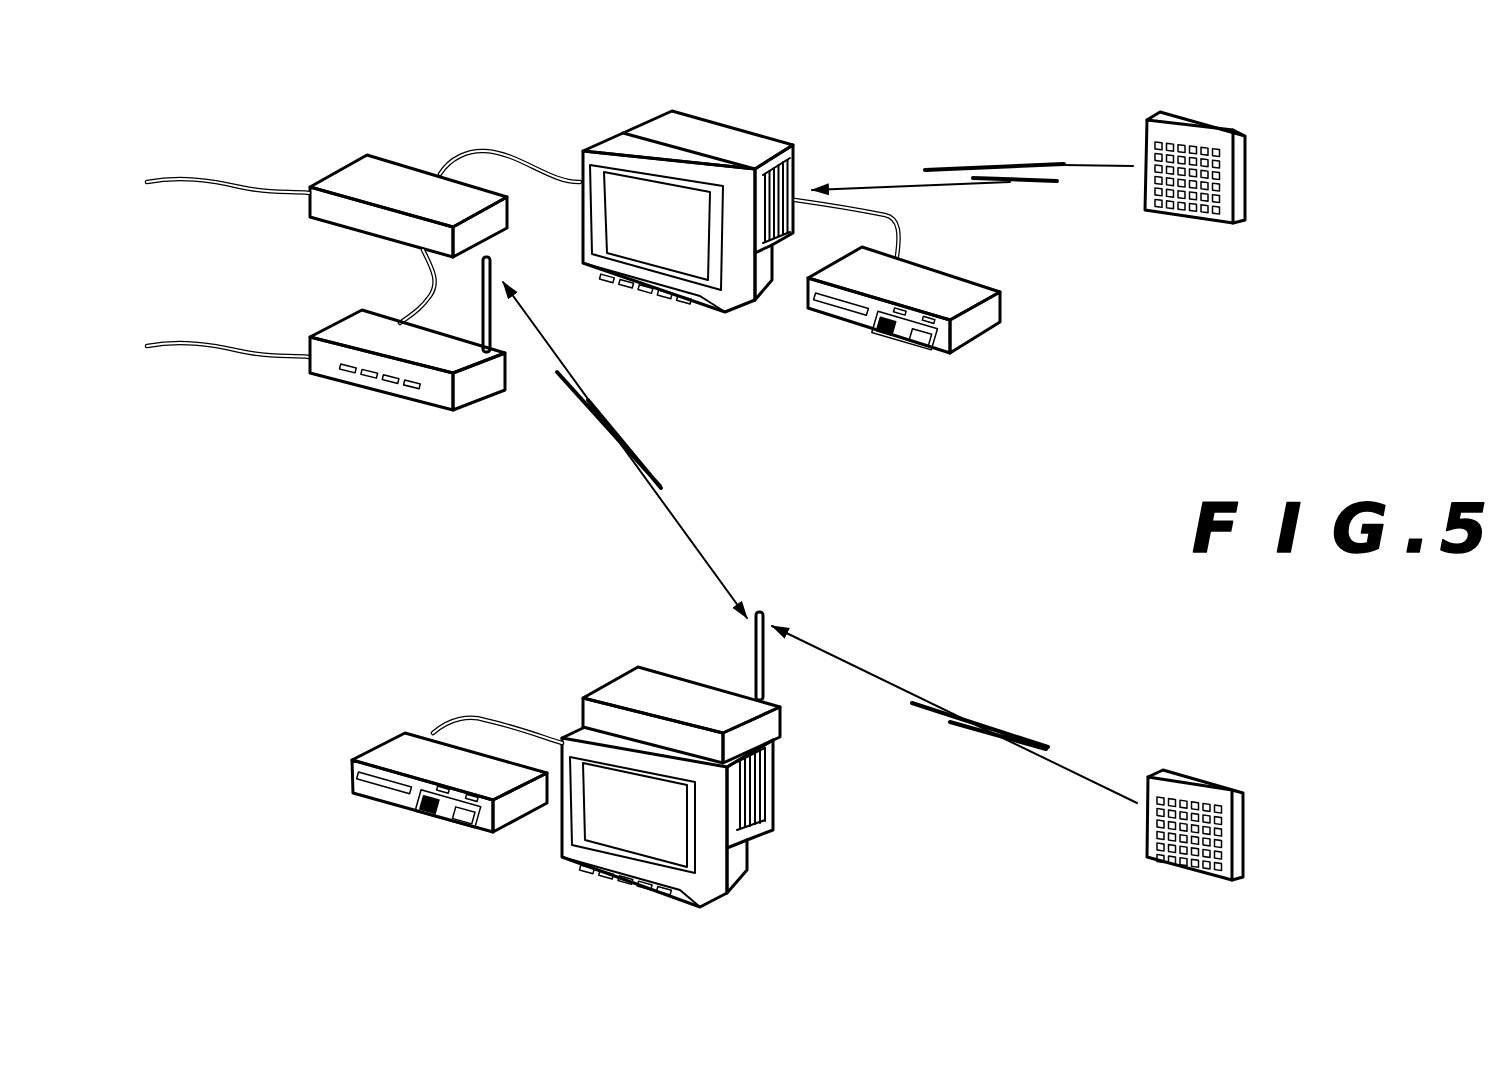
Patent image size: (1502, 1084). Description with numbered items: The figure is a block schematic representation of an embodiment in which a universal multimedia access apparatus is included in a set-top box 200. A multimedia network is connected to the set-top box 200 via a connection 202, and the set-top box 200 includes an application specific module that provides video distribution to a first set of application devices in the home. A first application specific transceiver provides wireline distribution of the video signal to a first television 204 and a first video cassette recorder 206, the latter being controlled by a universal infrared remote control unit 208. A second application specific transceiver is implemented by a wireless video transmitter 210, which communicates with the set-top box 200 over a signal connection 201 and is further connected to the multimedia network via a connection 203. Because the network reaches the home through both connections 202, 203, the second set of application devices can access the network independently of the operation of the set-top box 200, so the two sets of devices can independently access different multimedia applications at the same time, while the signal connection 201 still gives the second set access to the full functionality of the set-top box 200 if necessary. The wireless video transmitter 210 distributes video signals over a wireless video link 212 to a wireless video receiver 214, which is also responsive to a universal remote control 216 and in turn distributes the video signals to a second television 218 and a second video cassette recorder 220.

The set-top box 200 is at (362, 160).
The cable connecting set-top box and router 201 is at (423, 282).
The connection 202 is at (204, 182).
The connection 203 is at (202, 349).
The first television 204 is at (620, 145).
The first video cassette recorder 206 is at (875, 323).
The universal infrared remote control unit 208 is at (1170, 208).
The wireless video transmitter 210 is at (340, 328).
The wireless video link 212 is at (635, 477).
The wireless video receiver 214 is at (630, 680).
The universal remote control 216 is at (1193, 863).
The second television 218 is at (595, 825).
The second video cassette recorder 220 is at (400, 740).